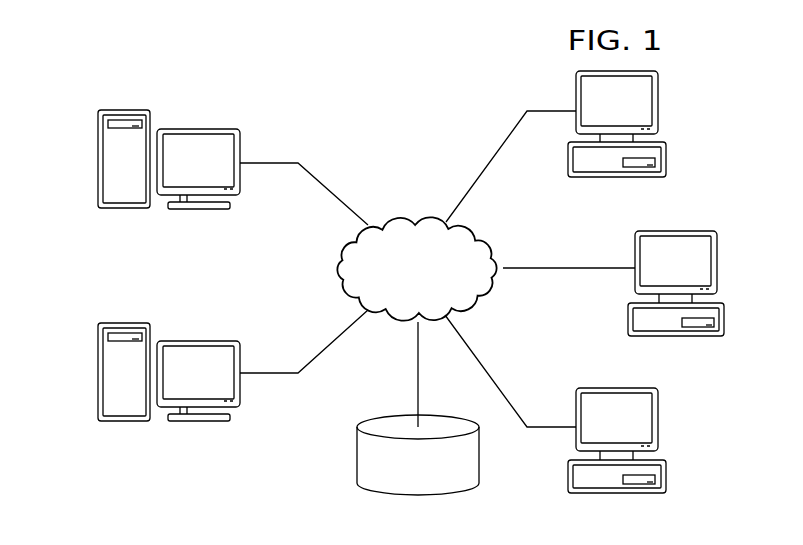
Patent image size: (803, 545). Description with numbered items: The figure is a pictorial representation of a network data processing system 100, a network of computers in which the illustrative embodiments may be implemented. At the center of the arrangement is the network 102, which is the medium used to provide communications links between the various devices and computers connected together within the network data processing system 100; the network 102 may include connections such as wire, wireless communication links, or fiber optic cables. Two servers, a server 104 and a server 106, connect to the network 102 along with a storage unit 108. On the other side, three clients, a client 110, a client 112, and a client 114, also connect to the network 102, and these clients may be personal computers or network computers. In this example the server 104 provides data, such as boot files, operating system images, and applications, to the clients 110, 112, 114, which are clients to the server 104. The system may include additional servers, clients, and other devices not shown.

The network data processing system 100 is at (303, 82).
The network 102 is at (413, 216).
The server 104 is at (98, 160).
The server 106 is at (98, 370).
The storage unit 108 is at (357, 456).
The client 110 is at (666, 160).
The client 112 is at (724, 318).
The client 114 is at (666, 476).